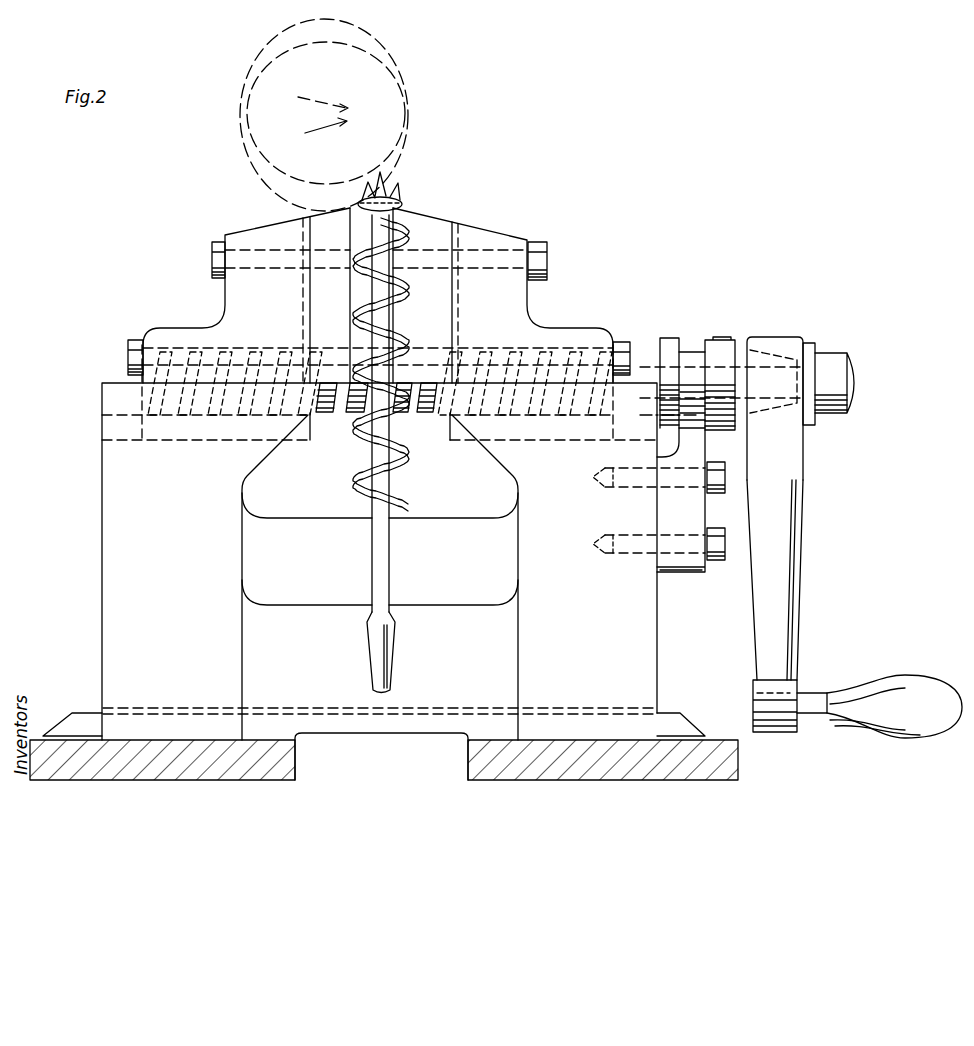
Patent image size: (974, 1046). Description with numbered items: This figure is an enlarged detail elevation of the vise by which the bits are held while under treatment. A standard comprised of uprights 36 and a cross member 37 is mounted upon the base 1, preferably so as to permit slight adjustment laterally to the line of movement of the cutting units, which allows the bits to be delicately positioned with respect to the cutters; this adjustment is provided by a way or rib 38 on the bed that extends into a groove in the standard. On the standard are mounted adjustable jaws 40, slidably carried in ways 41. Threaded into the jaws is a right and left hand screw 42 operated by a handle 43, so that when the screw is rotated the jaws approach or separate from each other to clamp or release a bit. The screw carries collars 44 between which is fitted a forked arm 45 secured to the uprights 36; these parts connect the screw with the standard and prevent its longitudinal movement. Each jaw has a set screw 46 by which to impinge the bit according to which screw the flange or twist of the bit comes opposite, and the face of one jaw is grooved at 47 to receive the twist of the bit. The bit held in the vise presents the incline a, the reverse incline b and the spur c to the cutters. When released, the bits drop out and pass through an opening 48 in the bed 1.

The base 1 is at (162, 748).
The uprights 36 is at (195, 528).
The cross member 37 is at (333, 640).
The way or rib 38 is at (673, 725).
The adjustable jaws 40 is at (232, 301).
The ways 41 is at (100, 440).
The right and left hand screw 42 is at (331, 417).
The handle 43 is at (783, 528).
The collars 44 is at (667, 340).
The forked arm 45 is at (692, 452).
The set screw 46 is at (214, 258).
The groove 47 is at (407, 210).
The opening 48 is at (398, 752).
The incline a is at (347, 226).
The reverse incline b is at (373, 228).
The spur c is at (387, 192).